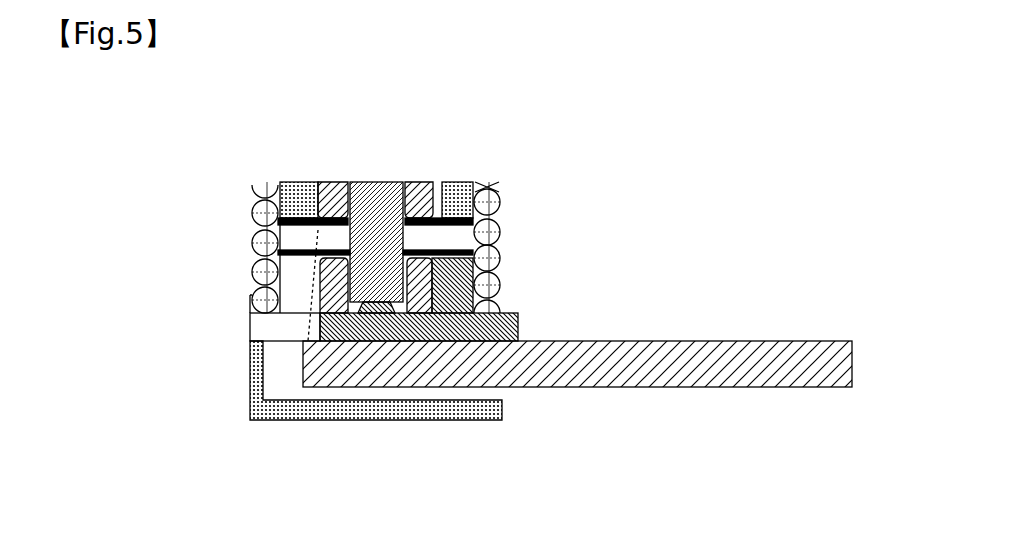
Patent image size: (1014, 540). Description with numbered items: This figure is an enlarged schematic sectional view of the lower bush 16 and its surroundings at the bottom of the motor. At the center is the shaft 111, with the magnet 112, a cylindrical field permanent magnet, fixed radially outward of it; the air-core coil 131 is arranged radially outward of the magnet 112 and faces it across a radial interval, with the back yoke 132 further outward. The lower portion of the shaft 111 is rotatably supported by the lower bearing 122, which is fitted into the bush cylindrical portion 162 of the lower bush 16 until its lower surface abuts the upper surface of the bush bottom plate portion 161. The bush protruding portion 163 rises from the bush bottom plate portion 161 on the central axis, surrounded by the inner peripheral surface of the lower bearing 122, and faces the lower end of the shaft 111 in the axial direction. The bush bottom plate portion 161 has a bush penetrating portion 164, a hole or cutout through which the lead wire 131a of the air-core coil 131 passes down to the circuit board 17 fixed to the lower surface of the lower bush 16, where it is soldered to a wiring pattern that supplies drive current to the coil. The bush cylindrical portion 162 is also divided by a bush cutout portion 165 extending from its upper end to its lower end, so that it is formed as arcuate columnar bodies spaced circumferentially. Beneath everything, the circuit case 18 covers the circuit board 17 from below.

The lower bush 16 is at (417, 310).
The circuit board 17 is at (833, 341).
The circuit case 18 is at (260, 422).
The shaft 111 is at (390, 190).
The magnet 112 is at (417, 185).
The lower bearing 122 is at (425, 295).
The air-core coil 131 is at (300, 187).
The lead wire 131a is at (318, 247).
The back yoke 132 is at (257, 228).
The bush bottom plate portion 161 is at (520, 318).
The bush cylindrical portion 162 is at (470, 268).
The bush protruding portion 163 is at (377, 315).
The bush penetrating portion 164 is at (293, 327).
The bush cutout portion 165 is at (252, 308).